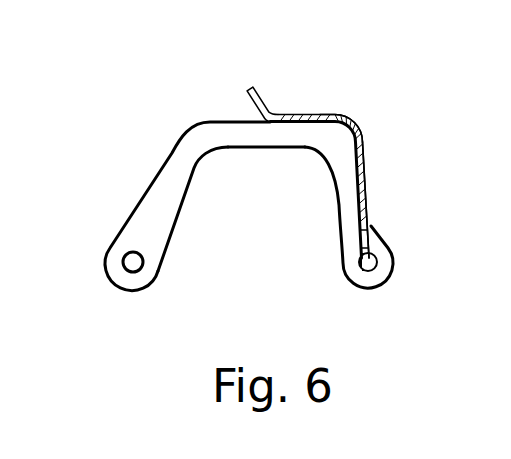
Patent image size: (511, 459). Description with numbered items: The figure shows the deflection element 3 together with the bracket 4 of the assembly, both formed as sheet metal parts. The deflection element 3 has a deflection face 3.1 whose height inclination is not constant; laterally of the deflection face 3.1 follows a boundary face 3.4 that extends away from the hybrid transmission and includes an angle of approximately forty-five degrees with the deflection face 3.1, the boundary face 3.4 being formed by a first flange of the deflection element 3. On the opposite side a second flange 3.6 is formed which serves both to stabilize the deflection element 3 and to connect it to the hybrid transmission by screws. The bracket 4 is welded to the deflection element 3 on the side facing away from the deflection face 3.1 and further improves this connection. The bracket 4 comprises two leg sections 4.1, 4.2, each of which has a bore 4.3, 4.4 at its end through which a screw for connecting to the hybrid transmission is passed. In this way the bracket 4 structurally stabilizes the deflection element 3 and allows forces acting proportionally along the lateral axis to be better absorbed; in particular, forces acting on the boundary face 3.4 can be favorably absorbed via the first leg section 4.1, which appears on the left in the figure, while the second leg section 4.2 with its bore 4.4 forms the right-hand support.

The deflection element 3 is at (366, 150).
The deflection face 3.1 is at (338, 104).
The boundary face 3.4 is at (268, 94).
The second flange 3.6 is at (382, 190).
The bracket 4 is at (175, 165).
The first leg section 4.1 is at (196, 206).
The second leg section 4.2 is at (329, 247).
The bore 4.3 is at (143, 278).
The bore 4.4 is at (388, 274).